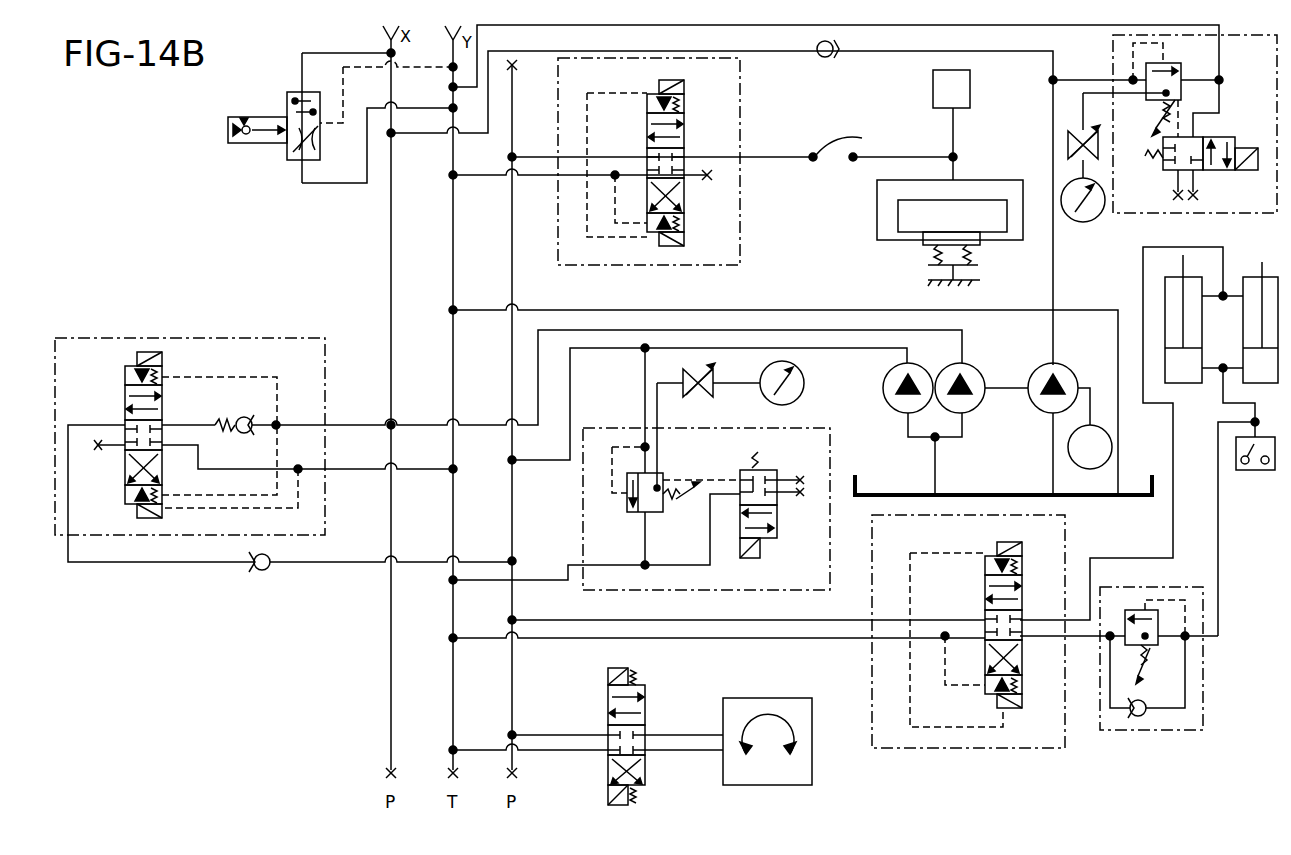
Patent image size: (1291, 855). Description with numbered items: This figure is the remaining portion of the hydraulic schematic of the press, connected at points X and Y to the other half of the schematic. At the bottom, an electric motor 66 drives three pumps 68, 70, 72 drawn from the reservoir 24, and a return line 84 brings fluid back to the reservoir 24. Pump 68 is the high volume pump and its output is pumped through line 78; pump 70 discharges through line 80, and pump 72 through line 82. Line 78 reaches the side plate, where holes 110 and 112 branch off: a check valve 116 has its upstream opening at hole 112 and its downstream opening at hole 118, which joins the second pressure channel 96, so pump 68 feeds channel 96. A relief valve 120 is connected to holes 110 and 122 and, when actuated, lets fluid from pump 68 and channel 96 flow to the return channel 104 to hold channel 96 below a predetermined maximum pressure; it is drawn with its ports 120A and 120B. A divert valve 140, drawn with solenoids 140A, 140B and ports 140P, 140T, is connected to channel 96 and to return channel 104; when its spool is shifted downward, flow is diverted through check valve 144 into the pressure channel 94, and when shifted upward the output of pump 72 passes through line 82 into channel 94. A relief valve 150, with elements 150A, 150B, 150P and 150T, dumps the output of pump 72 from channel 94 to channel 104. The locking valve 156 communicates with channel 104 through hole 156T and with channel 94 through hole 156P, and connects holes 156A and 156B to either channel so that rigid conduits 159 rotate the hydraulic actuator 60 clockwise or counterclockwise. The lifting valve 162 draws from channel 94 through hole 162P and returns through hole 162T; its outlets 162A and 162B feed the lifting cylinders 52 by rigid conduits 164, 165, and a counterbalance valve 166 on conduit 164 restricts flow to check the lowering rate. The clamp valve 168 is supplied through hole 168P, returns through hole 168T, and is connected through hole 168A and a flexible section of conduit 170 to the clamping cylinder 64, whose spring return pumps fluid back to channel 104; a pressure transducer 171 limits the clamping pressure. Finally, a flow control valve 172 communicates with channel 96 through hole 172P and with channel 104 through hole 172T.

The reservoir 24 is at (1012, 494).
The lifting cylinders 52 is at (1243, 352).
The hydraulic actuator 60 is at (790, 698).
The clamping cylinder 64 is at (995, 180).
The electric motor 66 is at (1070, 456).
The pump 68 is at (1037, 370).
The pump 70 is at (968, 365).
The pump 72 is at (886, 396).
The line 78 is at (418, 134).
The line 80 is at (340, 424).
The line 82 is at (804, 375).
The return line 84 is at (880, 310).
The pressure channel 94 is at (512, 540).
The second pressure channel 96 is at (391, 212).
The return channel 104 is at (453, 242).
The hole 110 is at (1135, 86).
The hole 112 is at (875, 51).
The check valve 116 is at (826, 58).
The hole 118 is at (817, 49).
The relief valve 120 is at (1136, 214).
The solenoid 120A is at (1200, 172).
The port 120B is at (1170, 172).
The hole 122 is at (1195, 80).
The divert valve 140 is at (202, 338).
The solenoid 140A is at (125, 410).
The solenoid 140B is at (125, 472).
The pressure port 140P is at (170, 428).
The tank port 140T is at (186, 450).
The check valve 144 is at (275, 570).
The relief valve 150 is at (728, 590).
The solenoid 150A is at (778, 554).
The valve 150B is at (777, 472).
The pressure port 150P is at (690, 458).
The tank port 150T is at (712, 500).
The locking valve 156 is at (646, 670).
The hole 156A is at (648, 700).
The hole 156B is at (648, 760).
The hole 156P is at (608, 735).
The hole 156T is at (608, 760).
The rigid conduits 159 is at (698, 735).
The lifting valve 162 is at (1000, 748).
The hole 162A is at (1022, 690).
The hole 162B is at (1020, 572).
The hole 162P is at (985, 602).
The hole 162T is at (985, 680).
The rigid conduit 164 is at (1218, 556).
The rigid conduit 165 is at (1173, 542).
The counterbalance valve 166 is at (1120, 730).
The clamp valve 168 is at (740, 180).
The hole 168A is at (684, 128).
The hole 168P is at (647, 150).
The hole 168T is at (622, 226).
The flexible section of conduit 170 is at (862, 138).
The pressure transducer 171 is at (970, 90).
The flow control valve 172 is at (287, 152).
The hole 172P is at (290, 94).
The hole 172T is at (300, 162).